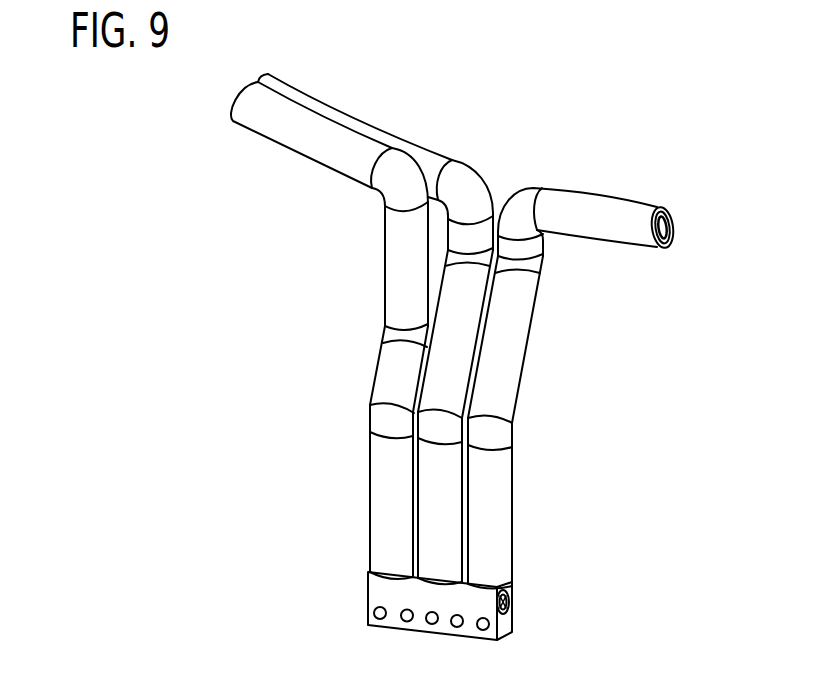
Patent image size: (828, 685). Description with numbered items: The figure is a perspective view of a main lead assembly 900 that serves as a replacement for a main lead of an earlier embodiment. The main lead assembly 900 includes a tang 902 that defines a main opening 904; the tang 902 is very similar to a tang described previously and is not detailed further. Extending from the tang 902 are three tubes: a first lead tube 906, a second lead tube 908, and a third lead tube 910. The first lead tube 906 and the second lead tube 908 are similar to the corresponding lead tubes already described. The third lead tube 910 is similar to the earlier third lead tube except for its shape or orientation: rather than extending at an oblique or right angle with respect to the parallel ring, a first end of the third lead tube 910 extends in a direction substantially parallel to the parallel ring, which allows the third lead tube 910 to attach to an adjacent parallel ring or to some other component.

The main lead assembly 900 is at (588, 126).
The tang 902 is at (382, 592).
The main opening 904 is at (509, 602).
The first lead tube 906 is at (513, 332).
The second lead tube 908 is at (403, 262).
The third lead tube 910 is at (449, 365).